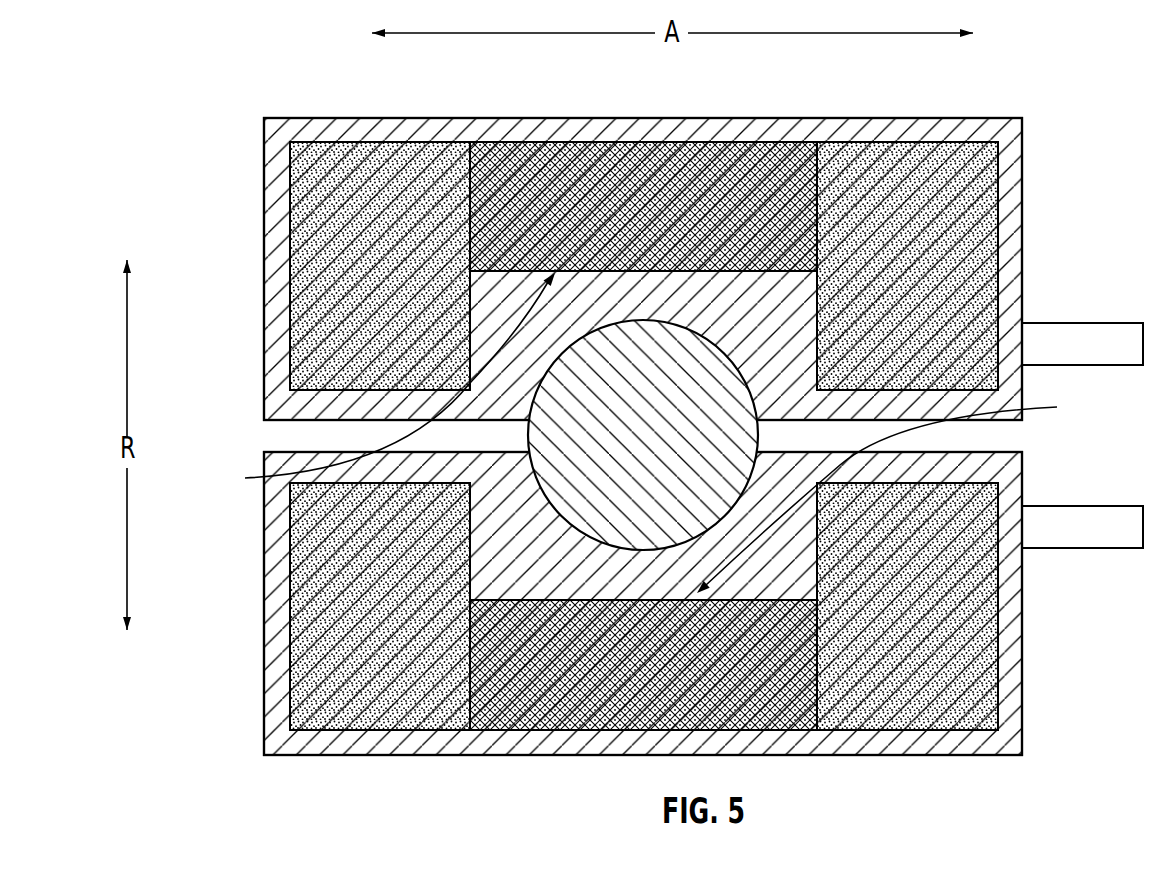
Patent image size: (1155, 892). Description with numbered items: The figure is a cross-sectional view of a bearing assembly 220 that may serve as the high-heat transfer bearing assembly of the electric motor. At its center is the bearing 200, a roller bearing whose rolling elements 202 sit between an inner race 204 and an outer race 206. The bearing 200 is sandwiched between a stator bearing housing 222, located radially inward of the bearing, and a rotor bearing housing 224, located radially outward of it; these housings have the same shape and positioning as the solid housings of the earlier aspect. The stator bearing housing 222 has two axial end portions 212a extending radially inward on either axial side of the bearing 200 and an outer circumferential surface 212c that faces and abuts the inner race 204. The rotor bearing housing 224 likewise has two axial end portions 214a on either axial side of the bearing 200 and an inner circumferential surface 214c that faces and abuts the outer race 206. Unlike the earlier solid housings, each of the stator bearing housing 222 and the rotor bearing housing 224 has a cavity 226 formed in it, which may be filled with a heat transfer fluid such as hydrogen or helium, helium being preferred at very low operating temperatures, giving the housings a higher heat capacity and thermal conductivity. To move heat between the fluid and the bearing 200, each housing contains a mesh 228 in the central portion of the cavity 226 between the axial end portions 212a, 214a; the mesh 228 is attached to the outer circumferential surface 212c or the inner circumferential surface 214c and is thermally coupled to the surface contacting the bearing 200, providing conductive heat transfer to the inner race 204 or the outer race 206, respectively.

The bearing assembly 220 is at (140, 74).
The bearing 200 is at (757, 303).
The rolling elements 202 is at (647, 367).
The inner race 204 is at (788, 548).
The outer race 206 is at (795, 352).
The axial end portions 212a is at (308, 560).
The outer circumferential surface 212c is at (906, 491).
The axial end portions 214a is at (305, 340).
The inner circumferential surface 214c is at (369, 384).
The stator bearing housing 222 is at (264, 678).
The rotor bearing housing 224 is at (264, 270).
The cavity 226 is at (398, 270).
The mesh 228 is at (785, 185).